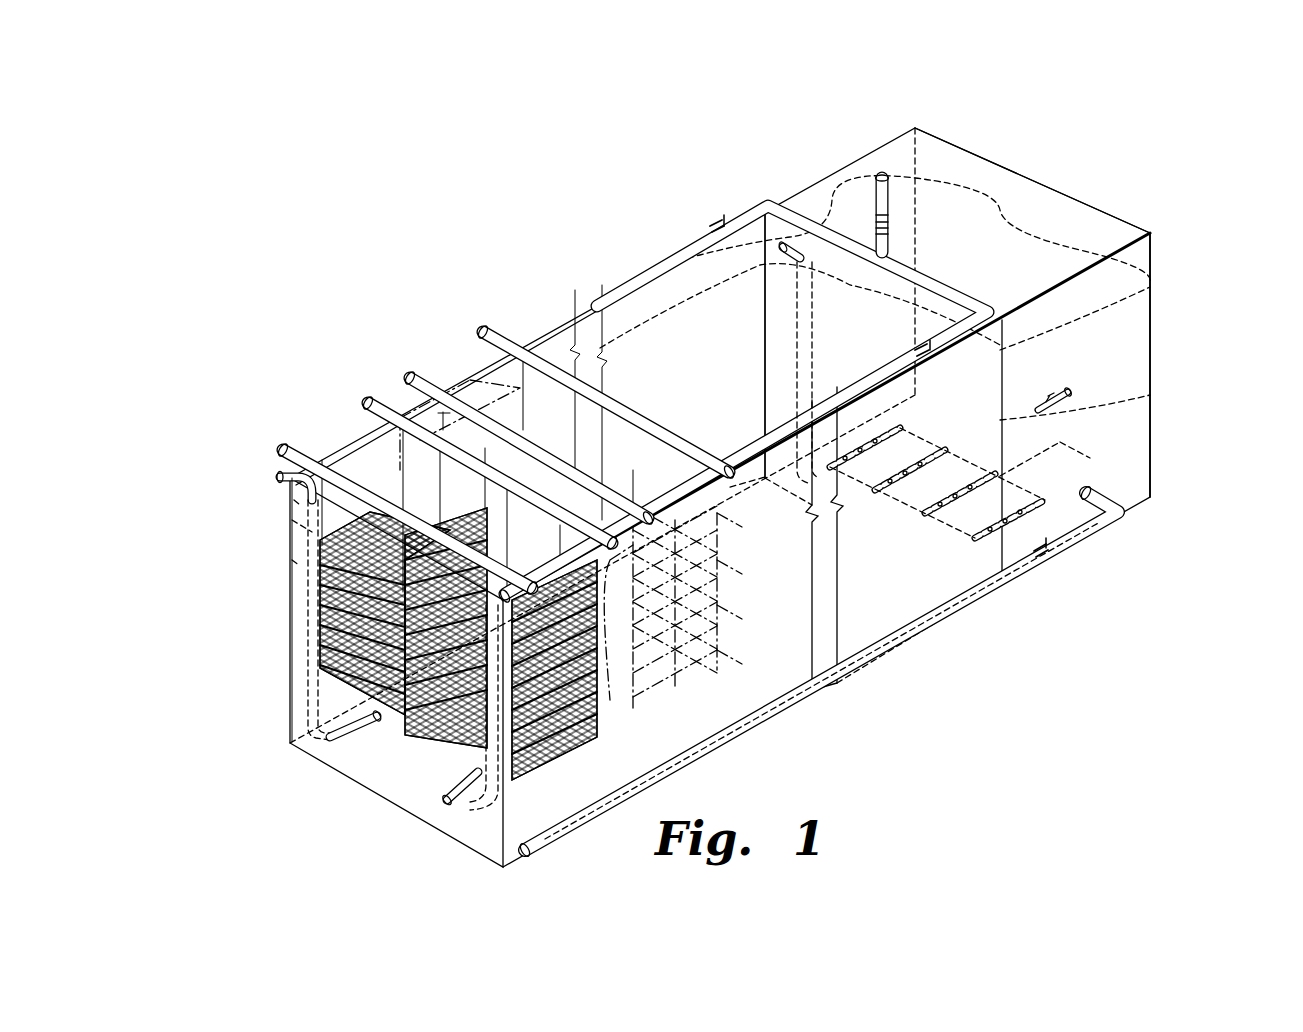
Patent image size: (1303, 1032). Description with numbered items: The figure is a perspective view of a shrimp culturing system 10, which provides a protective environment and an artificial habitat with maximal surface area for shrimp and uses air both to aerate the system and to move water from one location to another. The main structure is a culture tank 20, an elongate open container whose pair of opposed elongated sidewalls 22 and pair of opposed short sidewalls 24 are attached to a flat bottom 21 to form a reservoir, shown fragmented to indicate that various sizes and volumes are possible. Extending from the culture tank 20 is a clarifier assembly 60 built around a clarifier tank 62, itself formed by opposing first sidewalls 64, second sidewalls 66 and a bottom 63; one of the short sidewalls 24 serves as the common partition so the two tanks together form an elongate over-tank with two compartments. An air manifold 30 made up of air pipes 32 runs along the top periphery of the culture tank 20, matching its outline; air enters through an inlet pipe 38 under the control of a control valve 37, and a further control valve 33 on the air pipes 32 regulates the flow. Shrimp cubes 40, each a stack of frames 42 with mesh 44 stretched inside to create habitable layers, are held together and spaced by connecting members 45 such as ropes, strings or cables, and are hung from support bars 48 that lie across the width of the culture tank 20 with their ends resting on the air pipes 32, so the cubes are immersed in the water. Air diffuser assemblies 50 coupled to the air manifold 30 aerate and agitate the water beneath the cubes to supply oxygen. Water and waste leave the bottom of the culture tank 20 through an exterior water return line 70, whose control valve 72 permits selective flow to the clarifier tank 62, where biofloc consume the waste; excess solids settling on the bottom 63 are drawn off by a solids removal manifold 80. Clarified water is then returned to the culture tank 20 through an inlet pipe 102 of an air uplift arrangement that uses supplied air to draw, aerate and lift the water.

The shrimp culturing system 10 is at (1085, 108).
The culture tank 20 is at (280, 812).
The flat bottom 21 is at (787, 587).
The elongated sidewalls 22 is at (690, 358).
The short sidewalls 24 is at (873, 355).
The air manifold 30 is at (676, 205).
The air pipes 32 is at (465, 372).
The control valve 33 is at (716, 222).
The control valve 37 is at (890, 233).
The inlet pipe 38 is at (875, 170).
The shrimp cube 40 is at (410, 738).
The frames 42 is at (555, 745).
The mesh 44 is at (472, 778).
The connecting member 45 is at (486, 516).
The support bars 48 is at (282, 447).
The air diffuser assemblies 50 is at (282, 628).
The clarifier assembly 60 is at (1185, 325).
The clarifier tank 62 is at (822, 207).
The bottom 63 is at (920, 523).
The first sidewalls 64 is at (1125, 386).
The second sidewalls 66 is at (1078, 220).
The exterior water return line 70 is at (873, 666).
The control valve 72 is at (1046, 555).
The solids removal manifold 80 is at (1100, 437).
The inlet pipe 102 is at (762, 352).